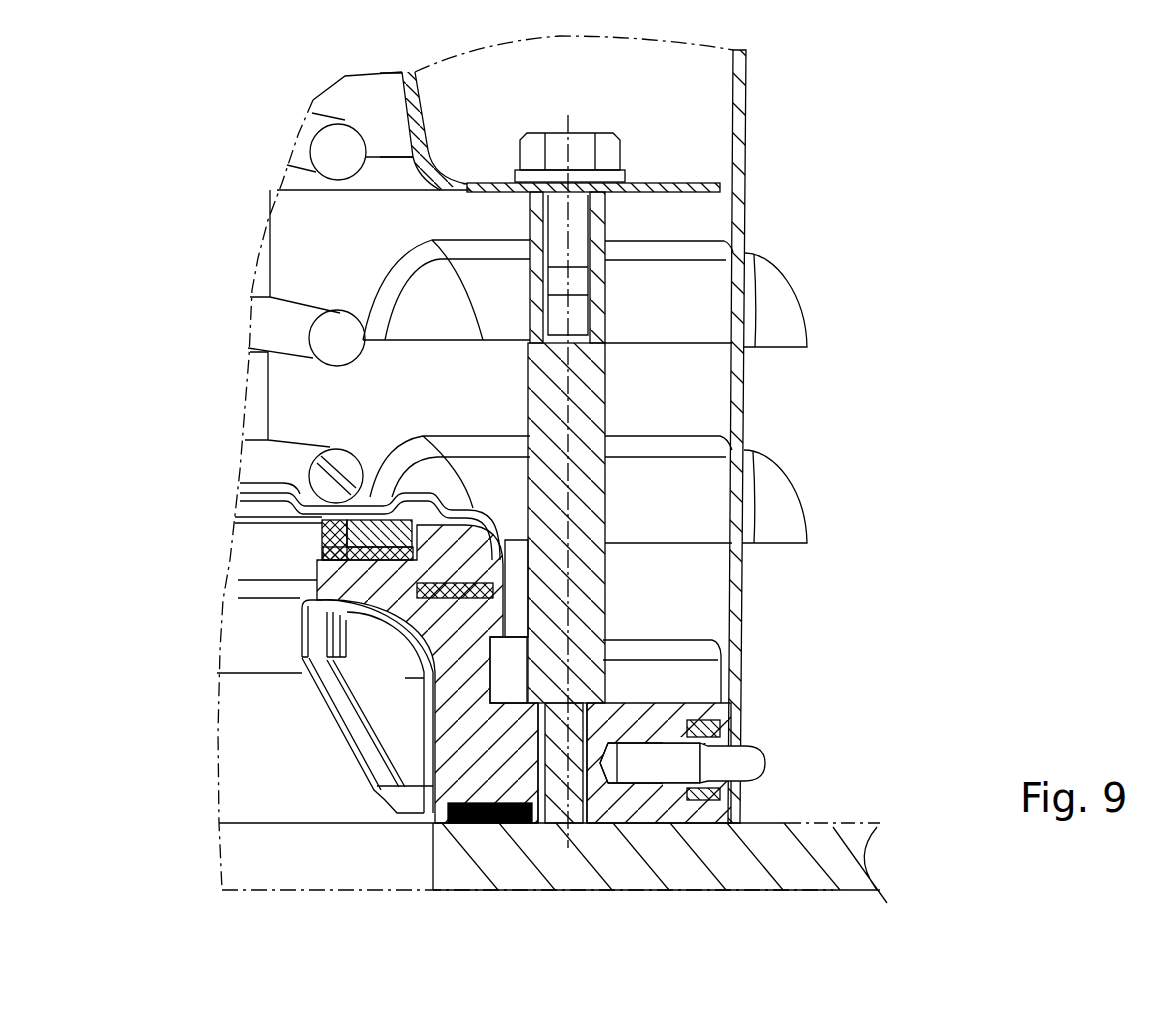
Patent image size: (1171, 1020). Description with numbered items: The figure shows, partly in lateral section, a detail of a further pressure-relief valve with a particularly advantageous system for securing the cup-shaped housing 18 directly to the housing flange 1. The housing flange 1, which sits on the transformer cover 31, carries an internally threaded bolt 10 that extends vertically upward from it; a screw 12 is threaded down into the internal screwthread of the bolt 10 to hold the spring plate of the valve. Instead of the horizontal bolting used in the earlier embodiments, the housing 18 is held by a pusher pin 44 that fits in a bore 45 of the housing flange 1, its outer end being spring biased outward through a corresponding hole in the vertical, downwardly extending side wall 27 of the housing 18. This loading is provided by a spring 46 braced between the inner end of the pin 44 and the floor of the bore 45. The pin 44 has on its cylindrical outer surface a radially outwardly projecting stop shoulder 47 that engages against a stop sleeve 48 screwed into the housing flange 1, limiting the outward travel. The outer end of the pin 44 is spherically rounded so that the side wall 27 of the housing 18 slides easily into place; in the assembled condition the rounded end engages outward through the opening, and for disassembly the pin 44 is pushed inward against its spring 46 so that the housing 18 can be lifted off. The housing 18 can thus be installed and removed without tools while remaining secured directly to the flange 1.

The housing flange 1 is at (690, 733).
The bolt 10 is at (577, 415).
The screw 12 is at (577, 227).
The housing 18 is at (690, 67).
The side wall 27 is at (740, 220).
The transformer cover 31 is at (830, 850).
The pusher pin 44 is at (747, 770).
The bore 45 is at (887, 903).
The spring 46 is at (643, 767).
The stop shoulder 47 is at (733, 793).
The stop sleeve 48 is at (700, 737).